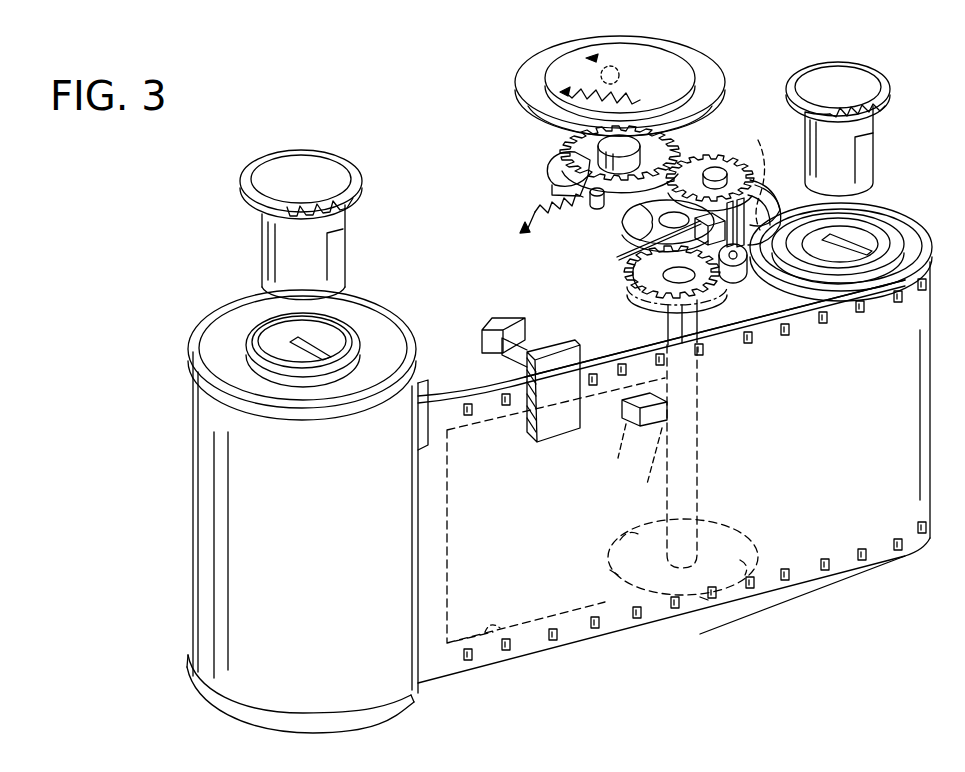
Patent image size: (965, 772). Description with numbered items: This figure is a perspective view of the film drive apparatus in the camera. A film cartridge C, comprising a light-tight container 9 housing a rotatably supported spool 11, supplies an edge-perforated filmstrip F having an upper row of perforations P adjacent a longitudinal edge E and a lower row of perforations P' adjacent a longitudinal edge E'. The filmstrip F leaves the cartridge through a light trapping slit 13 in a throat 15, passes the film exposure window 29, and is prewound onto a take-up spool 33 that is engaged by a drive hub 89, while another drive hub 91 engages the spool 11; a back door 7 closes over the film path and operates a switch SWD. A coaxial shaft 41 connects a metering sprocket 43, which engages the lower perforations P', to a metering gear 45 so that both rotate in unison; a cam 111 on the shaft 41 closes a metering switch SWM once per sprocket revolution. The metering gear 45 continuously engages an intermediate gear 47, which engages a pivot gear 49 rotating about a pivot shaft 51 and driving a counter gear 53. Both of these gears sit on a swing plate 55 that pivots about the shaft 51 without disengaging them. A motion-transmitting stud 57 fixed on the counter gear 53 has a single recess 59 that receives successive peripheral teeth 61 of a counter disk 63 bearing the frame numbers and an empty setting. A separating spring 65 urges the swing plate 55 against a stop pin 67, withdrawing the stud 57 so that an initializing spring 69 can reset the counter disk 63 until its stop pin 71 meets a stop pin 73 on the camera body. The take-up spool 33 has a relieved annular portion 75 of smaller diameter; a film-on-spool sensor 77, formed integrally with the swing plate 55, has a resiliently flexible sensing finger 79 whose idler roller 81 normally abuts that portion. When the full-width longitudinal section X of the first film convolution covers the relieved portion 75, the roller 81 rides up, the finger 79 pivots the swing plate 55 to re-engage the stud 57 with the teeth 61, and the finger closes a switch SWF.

The back door 7 is at (560, 354).
The light-tight container 9 is at (210, 557).
The spool 11 is at (283, 336).
The light trapping slit 13 is at (421, 446).
The throat 15 is at (406, 606).
The film exposure window 29 is at (491, 638).
The take-up spool 33 is at (862, 228).
The coaxial shaft 41 is at (667, 332).
The metering sprocket 43 is at (738, 540).
The metering gear 45 is at (640, 291).
The intermediate gear 47 is at (618, 228).
The pivot gear 49 is at (768, 192).
The pivot shaft 51 is at (718, 172).
The counter gear 53 is at (667, 164).
The swing plate 55 is at (762, 173).
The motion-transmitting stud 57 is at (552, 174).
The recess 59 is at (562, 154).
The peripheral teeth 61 is at (565, 143).
The counter disk 63 is at (541, 62).
The separating spring 65 is at (545, 212).
The stop pin 67 is at (594, 204).
The initializing spring 69 is at (560, 92).
The stop pin 71 is at (590, 58).
The stop pin 73 is at (714, 86).
The relieved annular portion 75 is at (893, 232).
The film-on-spool sensor 77 is at (762, 208).
The sensing finger 79 is at (770, 215).
The idler roller 81 is at (737, 278).
The drive hub 89 is at (874, 100).
The drive hub 91 is at (346, 238).
The cam 111 is at (640, 463).
The film cartridge C is at (190, 419).
The longitudinal edge E is at (668, 332).
The longitudinal edge E' is at (802, 609).
The filmstrip F is at (618, 622).
The perforations P is at (695, 375).
The perforations P' is at (695, 593).
The switch SWD is at (490, 329).
The switch SWF is at (648, 240).
The metering switch SWM is at (624, 436).
The longitudinal section X is at (903, 233).